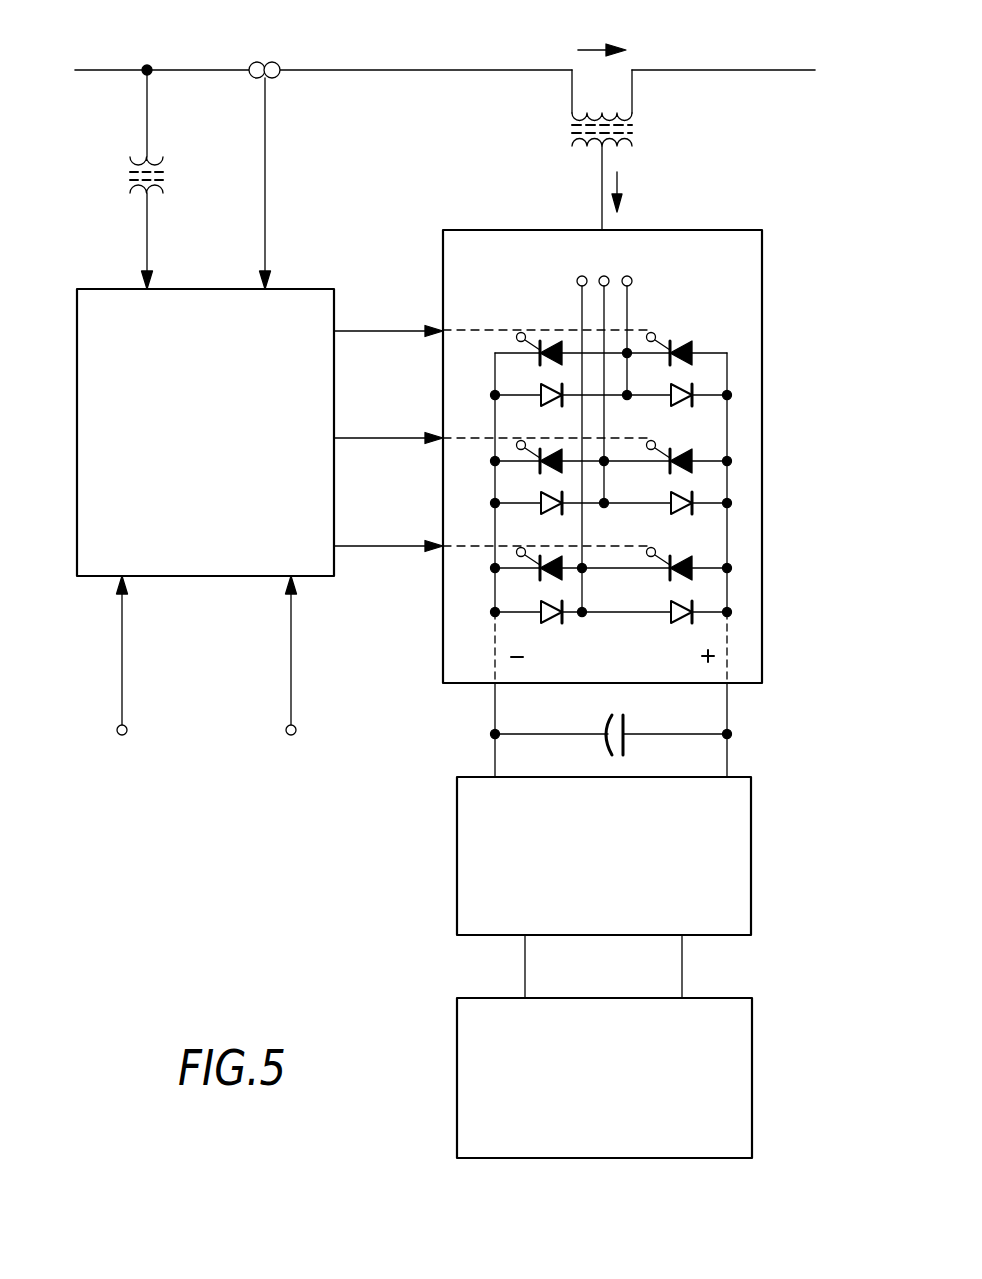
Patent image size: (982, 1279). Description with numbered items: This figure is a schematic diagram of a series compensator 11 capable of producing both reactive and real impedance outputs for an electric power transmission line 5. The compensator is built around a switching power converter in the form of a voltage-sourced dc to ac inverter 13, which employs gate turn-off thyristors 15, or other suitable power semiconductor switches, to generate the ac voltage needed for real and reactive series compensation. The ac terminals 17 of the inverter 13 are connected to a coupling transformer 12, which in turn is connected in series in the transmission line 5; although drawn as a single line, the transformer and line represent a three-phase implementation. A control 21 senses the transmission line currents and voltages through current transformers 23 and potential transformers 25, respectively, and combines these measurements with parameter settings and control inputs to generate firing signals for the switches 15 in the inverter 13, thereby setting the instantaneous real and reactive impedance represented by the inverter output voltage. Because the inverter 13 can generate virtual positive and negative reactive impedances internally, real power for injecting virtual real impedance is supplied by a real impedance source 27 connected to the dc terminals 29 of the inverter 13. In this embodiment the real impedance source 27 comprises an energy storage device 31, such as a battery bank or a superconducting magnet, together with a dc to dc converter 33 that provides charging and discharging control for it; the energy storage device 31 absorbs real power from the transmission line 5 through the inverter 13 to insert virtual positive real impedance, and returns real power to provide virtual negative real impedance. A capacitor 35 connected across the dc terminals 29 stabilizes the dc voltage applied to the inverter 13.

The transmission line 5 is at (739, 68).
The series compensator 11 is at (806, 316).
The coupling transformer 12 is at (579, 149).
The voltage-sourced dc to ac inverter 13 is at (635, 506).
The gate turn-off thyristors 15 is at (670, 575).
The ac terminals 17 is at (634, 281).
The control 21 is at (77, 512).
The current transformers 23 is at (276, 62).
The potential transformers 25 is at (140, 196).
The real impedance source 27 is at (808, 945).
The dc terminals 29 is at (643, 730).
The energy storage device 31 is at (753, 1085).
The dc to dc converter 33 is at (752, 875).
The capacitor 35 is at (631, 742).